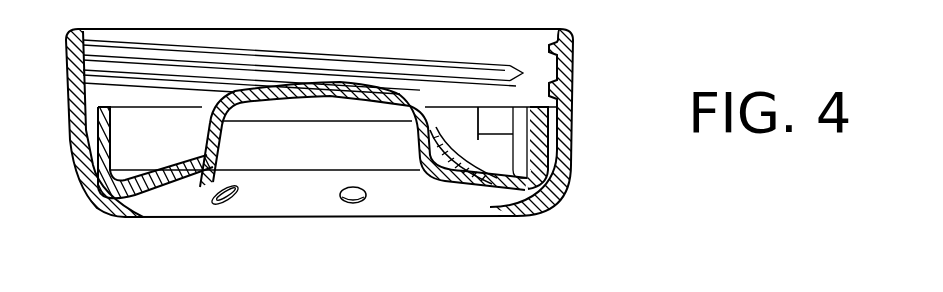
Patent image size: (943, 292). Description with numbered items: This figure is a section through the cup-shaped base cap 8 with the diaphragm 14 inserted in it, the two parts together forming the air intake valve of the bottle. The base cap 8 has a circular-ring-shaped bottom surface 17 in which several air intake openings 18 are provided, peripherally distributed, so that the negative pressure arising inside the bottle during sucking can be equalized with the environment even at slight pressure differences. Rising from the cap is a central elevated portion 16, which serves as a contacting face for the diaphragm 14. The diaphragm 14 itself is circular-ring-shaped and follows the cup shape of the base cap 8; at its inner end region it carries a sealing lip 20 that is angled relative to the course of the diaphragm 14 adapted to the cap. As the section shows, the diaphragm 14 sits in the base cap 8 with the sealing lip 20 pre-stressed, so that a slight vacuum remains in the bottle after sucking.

The base cap 8 is at (90, 168).
The diaphragm 14 is at (580, 125).
The central elevated portion 16 is at (250, 100).
The bottom surface 17 is at (480, 192).
The air intake openings 18 is at (353, 201).
The sealing lip 20 is at (435, 145).